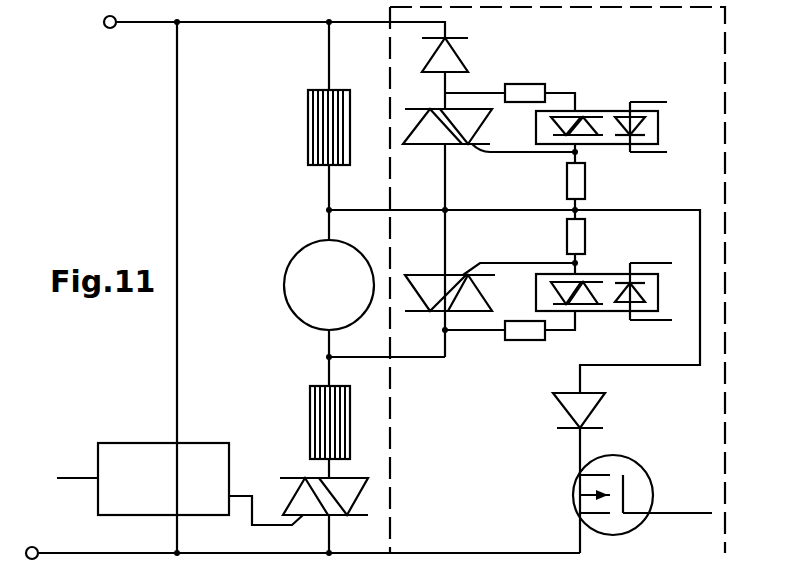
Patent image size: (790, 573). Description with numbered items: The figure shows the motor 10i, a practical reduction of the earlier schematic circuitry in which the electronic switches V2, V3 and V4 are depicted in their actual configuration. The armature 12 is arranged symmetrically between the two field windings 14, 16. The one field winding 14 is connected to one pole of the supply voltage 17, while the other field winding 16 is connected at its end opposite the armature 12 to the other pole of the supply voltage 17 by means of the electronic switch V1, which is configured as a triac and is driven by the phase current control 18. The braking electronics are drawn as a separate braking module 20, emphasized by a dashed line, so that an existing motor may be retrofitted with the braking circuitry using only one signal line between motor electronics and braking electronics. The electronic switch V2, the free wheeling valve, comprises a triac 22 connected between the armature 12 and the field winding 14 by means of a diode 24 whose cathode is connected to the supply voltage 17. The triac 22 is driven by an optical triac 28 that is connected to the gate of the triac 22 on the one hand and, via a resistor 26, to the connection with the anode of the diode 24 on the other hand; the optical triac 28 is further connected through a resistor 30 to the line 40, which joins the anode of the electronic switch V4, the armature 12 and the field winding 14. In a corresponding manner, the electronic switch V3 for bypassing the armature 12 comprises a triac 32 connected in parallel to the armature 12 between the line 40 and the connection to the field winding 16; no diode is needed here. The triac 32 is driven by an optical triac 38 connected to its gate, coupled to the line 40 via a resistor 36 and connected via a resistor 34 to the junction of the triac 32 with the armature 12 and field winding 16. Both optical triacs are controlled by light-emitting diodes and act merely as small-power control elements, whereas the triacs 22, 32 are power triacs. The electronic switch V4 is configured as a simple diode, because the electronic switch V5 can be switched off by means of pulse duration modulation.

The motor 10i is at (104, 150).
The supply voltage 17 is at (113, 29).
The field winding 14 is at (322, 128).
The line 40 is at (367, 210).
The armature 12 is at (298, 293).
The field winding 16 is at (320, 413).
The phase current control 18 is at (130, 458).
The electronic switch V1 is at (350, 485).
The braking module 20 is at (706, 72).
The diode 24 is at (450, 62).
The electronic switch V2 is at (483, 85).
The resistor 26 is at (534, 92).
The triac 22 is at (430, 135).
The optical triac 28 is at (606, 117).
The resistor 30 is at (580, 178).
The resistor 36 is at (580, 237).
The triac 32 is at (466, 305).
The electronic switch V3 is at (455, 275).
The optical triac 38 is at (600, 303).
The resistor 34 is at (528, 333).
The electronic switch V4 is at (585, 408).
The electronic switch V5 is at (637, 482).